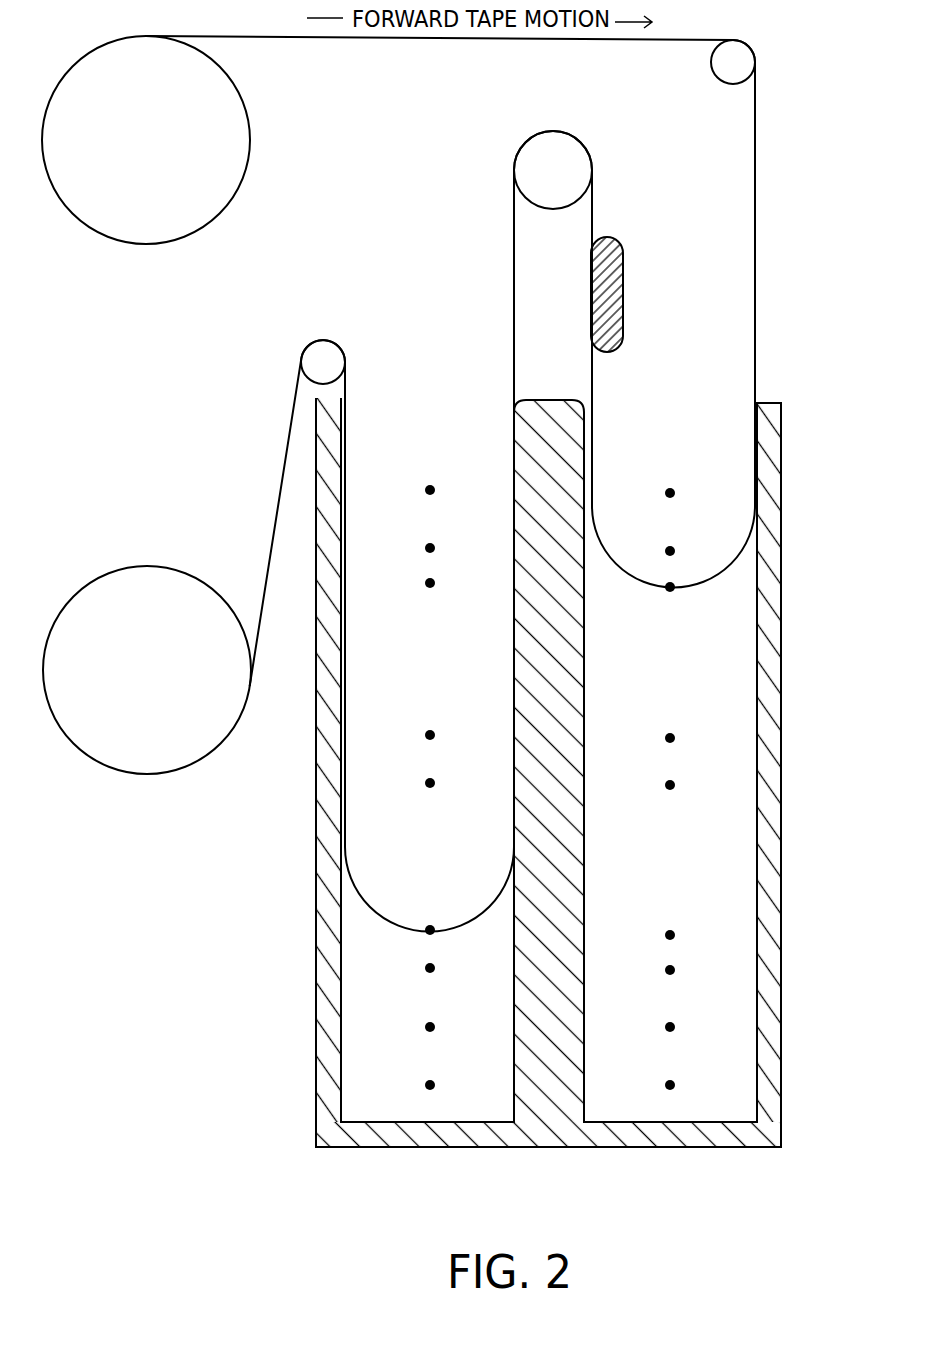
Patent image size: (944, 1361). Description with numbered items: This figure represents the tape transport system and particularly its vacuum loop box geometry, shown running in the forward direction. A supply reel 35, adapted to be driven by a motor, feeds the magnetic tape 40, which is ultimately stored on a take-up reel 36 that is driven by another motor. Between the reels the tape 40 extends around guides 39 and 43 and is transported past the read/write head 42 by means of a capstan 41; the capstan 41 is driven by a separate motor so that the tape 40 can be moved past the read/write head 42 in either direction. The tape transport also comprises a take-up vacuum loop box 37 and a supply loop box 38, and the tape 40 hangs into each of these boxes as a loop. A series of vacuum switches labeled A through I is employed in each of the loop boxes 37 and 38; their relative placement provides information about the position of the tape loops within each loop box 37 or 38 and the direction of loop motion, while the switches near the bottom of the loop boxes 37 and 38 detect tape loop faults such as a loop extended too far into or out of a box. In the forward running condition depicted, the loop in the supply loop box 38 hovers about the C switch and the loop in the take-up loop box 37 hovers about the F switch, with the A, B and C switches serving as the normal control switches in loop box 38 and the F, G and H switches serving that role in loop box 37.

The supply reel 35 is at (230, 140).
The take-up reel 36 is at (155, 582).
The take-up vacuum loop box 37 is at (378, 848).
The supply loop box 38 is at (710, 863).
The guide 39 is at (330, 354).
The magnetic tape 40 is at (484, 38).
The capstan 41 is at (577, 167).
The read/write head 42 is at (615, 267).
The guide 43 is at (742, 62).